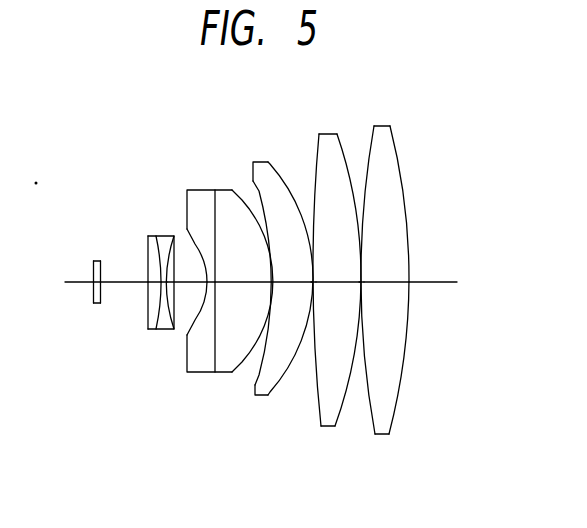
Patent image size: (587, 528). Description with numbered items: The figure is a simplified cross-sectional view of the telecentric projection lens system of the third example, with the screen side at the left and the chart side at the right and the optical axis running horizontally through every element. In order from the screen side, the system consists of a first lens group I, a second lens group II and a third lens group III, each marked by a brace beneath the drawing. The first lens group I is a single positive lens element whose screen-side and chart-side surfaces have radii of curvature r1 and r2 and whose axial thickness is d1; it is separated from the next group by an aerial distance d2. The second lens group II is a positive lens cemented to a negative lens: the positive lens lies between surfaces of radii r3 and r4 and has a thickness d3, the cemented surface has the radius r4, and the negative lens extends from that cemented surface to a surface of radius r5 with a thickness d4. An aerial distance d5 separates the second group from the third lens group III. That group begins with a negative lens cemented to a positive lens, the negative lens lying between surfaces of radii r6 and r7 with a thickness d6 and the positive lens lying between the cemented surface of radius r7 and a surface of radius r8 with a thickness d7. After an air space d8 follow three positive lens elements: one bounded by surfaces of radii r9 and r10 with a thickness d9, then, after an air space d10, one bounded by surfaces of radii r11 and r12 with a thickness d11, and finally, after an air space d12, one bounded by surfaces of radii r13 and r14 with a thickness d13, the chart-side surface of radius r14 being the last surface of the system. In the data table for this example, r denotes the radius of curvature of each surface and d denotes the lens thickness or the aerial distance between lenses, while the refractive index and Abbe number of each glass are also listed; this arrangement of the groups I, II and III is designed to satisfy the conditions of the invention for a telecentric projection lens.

The radius of curvature of the first surface r1 is at (93, 261).
The radius of curvature of the second surface r2 is at (100, 262).
The radius of curvature of the third surface r3 is at (148, 237).
The radius of curvature of the fourth surface r4 is at (159, 236).
The radius of curvature of the fifth surface r5 is at (167, 236).
The radius of curvature of the sixth surface r6 is at (193, 245).
The radius of curvature of the seventh surface r7 is at (216, 208).
The radius of curvature of the eighth surface r8 is at (243, 197).
The radius of curvature of the ninth surface r9 is at (258, 191).
The radius of curvature of the tenth surface r10 is at (278, 184).
The radius of curvature of the eleventh surface r11 is at (319, 162).
The radius of curvature of the twelfth surface r12 is at (339, 142).
The radius of curvature of the thirteenth surface r13 is at (373, 152).
The radius of curvature of the fourteenth surface r14 is at (395, 148).
The thickness of the first lens d1 is at (95, 303).
The aerial distance between the first and second lens groups d2 is at (118, 283).
The thickness of the second-group positive lens d3 is at (148, 290).
The thickness of the second-group negative lens d4 is at (164, 284).
The aerial distance between the second and third lens groups d5 is at (183, 283).
The thickness of the third-group negative lens d6 is at (217, 283).
The thickness of the third-group cemented positive lens d7 is at (235, 283).
The air space after the third-group cemented pair d8 is at (272, 284).
The thickness of the first single positive lens of the third group d9 is at (313, 284).
The air space between the first and second single positive lenses d10 is at (340, 284).
The thickness of the second single positive lens of the third group d11 is at (361, 284).
The air space between the second and third single positive lenses d12 is at (363, 288).
The thickness of the last positive lens d13 is at (388, 286).
The first lens group I is at (107, 474).
The second lens group II is at (170, 474).
The third lens group III is at (490, 474).